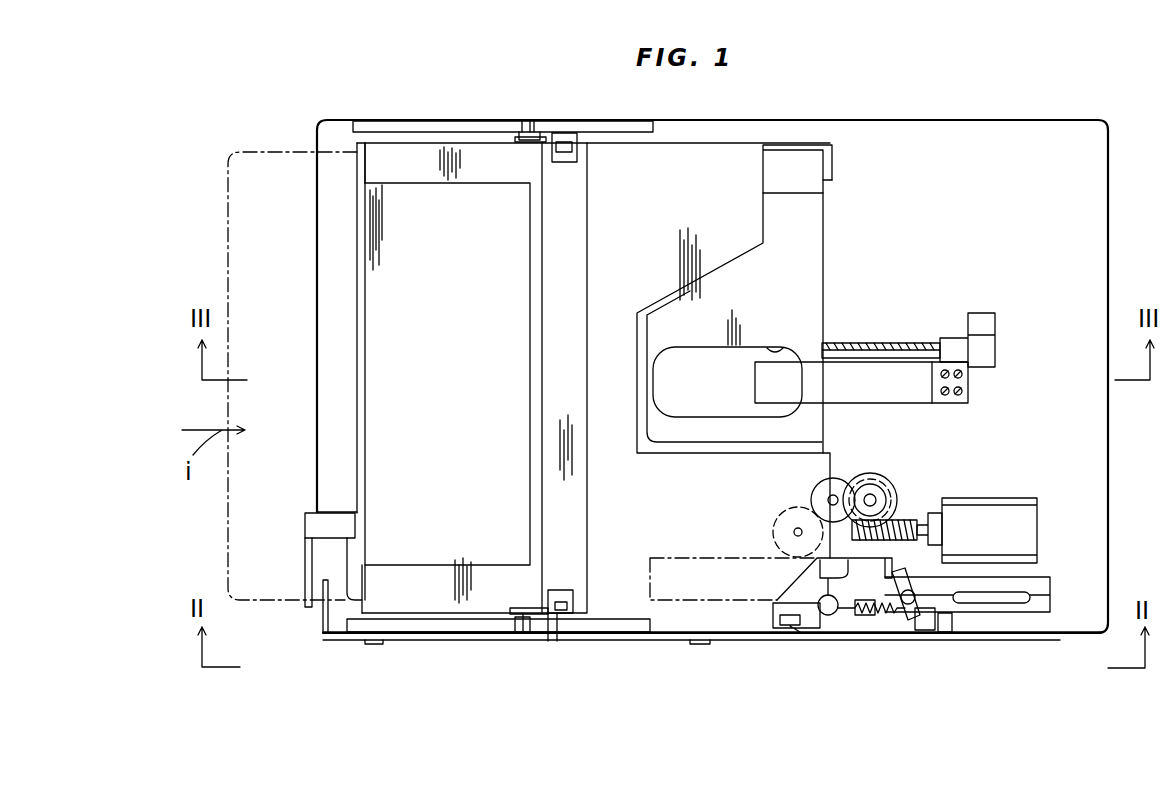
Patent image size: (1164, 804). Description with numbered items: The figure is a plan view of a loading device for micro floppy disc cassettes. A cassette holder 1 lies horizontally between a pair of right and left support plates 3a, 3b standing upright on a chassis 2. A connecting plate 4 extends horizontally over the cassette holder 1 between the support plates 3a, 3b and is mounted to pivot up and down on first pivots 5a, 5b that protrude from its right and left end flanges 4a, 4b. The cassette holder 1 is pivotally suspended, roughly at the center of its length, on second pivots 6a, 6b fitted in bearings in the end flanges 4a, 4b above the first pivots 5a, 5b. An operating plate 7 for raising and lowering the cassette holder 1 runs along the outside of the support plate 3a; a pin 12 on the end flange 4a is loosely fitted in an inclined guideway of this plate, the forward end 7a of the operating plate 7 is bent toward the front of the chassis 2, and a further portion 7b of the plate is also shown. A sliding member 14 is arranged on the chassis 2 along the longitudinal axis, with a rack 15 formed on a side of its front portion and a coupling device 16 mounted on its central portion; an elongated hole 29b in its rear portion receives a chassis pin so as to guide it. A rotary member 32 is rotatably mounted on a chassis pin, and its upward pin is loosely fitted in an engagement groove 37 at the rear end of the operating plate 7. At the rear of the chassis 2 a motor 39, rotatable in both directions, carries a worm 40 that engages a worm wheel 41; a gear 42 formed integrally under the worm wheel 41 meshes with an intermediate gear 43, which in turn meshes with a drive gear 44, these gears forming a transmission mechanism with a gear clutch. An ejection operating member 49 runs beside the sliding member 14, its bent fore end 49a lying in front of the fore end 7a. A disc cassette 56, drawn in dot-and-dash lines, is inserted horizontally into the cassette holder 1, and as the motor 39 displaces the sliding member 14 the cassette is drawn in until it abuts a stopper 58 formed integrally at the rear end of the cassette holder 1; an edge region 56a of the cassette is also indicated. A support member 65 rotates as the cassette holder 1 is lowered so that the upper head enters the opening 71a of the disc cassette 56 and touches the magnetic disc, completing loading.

The cassette holder 1 is at (712, 163).
The chassis 2 is at (975, 130).
The support plate 3a is at (412, 627).
The support plate 3b is at (480, 122).
The connecting plate 4 is at (553, 495).
The end flange 4a is at (530, 613).
The end flange 4b is at (540, 135).
The first pivot 5a is at (520, 618).
The first pivot 5b is at (535, 130).
The second pivot 6a is at (565, 613).
The second pivot 6b is at (563, 134).
The operating plate 7 is at (665, 637).
The fore end of operating plate 7a is at (325, 625).
The base plate right portion 7b is at (930, 636).
The pin 12 is at (552, 620).
The sliding member 14 is at (737, 600).
The rack 15 is at (800, 556).
The coupling device 16 is at (825, 613).
The elongated hole 29b is at (1030, 600).
The rotary member 32 is at (945, 580).
The engagement groove 37 is at (905, 617).
The motor 39 is at (1015, 497).
The worm 40 is at (905, 522).
The worm wheel 41 is at (875, 478).
The gear 42 is at (886, 497).
The intermediate gear 43 is at (835, 478).
The drive gear 44 is at (775, 520).
The ejection operating member 49 is at (335, 520).
The fore end of ejection operating member 49a is at (307, 572).
The disc cassette 56 is at (380, 238).
The cassette edge 56a is at (838, 183).
The stopper 58 is at (836, 162).
The support member 65 is at (877, 372).
The opening of disc cassette 71a is at (787, 348).